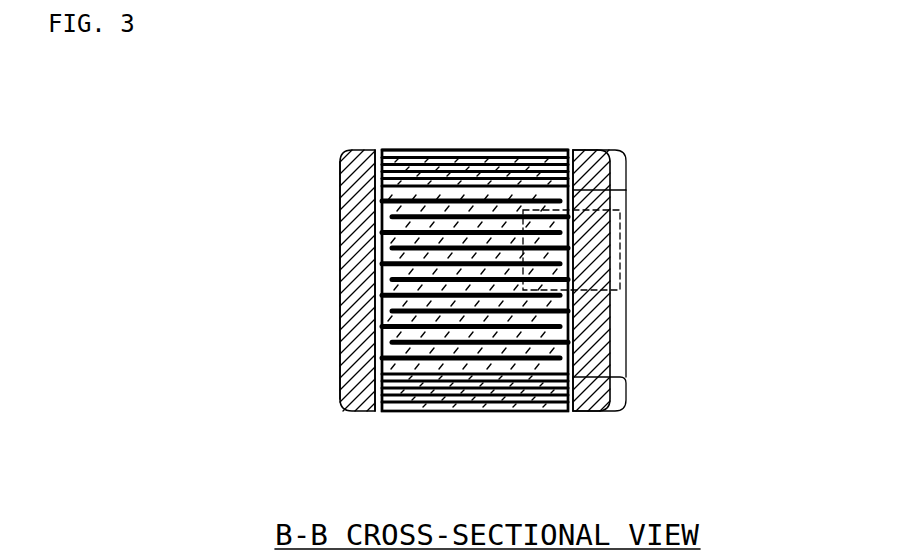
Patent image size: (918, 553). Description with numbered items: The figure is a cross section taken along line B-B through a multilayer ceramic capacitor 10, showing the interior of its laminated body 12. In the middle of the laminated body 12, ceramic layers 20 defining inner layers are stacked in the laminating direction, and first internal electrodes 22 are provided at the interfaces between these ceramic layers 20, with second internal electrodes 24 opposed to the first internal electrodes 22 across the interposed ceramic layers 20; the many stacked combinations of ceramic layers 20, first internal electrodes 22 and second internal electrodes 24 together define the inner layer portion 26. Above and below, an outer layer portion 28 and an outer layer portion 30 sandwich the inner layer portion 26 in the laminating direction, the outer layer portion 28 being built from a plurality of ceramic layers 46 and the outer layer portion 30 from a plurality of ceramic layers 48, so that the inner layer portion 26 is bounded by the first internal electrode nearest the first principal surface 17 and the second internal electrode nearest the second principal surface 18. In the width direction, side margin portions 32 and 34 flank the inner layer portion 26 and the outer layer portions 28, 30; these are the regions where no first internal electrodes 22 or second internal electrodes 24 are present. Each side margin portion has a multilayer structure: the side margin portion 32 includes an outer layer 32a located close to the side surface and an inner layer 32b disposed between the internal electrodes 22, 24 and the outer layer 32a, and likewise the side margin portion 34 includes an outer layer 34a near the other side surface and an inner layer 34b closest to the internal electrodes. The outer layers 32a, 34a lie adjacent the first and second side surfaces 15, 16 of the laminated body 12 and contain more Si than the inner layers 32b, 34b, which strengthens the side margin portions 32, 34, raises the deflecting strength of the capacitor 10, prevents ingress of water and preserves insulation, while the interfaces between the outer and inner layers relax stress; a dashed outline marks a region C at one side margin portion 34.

The multilayer ceramic capacitor 10 is at (318, 78).
The laminated body 12 is at (398, 151).
The first side surface 15 is at (650, 280).
The second side surface 16 is at (340, 290).
The first principal surface 17 is at (527, 150).
The second principal surface 18 is at (470, 411).
The ceramic layers 20 is at (552, 337).
The first internal electrodes 22 is at (424, 257).
The second internal electrodes 24 is at (453, 297).
The inner layer portion 26 is at (628, 192).
The outer layer portion 28 is at (628, 152).
The outer layer portion 30 is at (628, 379).
The side margin portion 32 is at (282, 259).
The outer layer 32a is at (350, 175).
The inner layer 32b is at (377, 152).
The side margin portion 34 is at (685, 230).
The outer layer 34a is at (597, 166).
The inner layer 34b is at (576, 151).
The ceramic layers 46 is at (488, 165).
The ceramic layers 48 is at (514, 377).
The region C is at (612, 259).